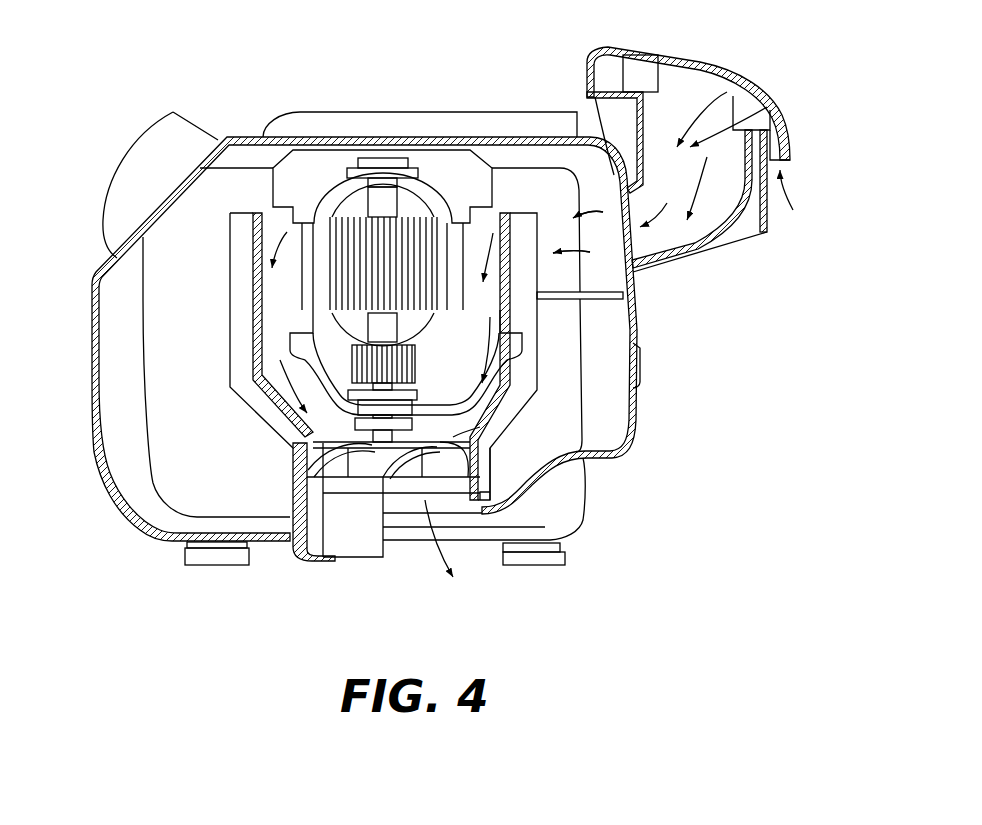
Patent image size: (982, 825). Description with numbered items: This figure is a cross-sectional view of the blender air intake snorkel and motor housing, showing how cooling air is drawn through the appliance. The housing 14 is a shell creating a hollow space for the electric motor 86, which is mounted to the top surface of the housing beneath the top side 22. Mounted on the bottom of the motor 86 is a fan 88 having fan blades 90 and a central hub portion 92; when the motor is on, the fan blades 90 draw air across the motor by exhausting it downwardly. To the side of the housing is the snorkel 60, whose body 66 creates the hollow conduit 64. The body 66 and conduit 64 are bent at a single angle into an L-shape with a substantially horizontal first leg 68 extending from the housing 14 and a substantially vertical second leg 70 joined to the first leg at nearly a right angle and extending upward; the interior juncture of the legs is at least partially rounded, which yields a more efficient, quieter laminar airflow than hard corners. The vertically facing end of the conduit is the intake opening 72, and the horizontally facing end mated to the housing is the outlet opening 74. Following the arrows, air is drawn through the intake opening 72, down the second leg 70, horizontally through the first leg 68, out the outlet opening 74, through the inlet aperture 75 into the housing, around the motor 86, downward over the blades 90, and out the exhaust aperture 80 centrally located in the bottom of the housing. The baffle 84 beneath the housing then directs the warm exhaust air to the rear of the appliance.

The housing 14 is at (92, 378).
The top side 22 is at (232, 136).
The snorkel 60 is at (752, 255).
The conduit 64 is at (767, 102).
The body 66 is at (767, 232).
The first leg 68 is at (747, 248).
The second leg 70 is at (733, 180).
The intake opening 72 is at (670, 88).
The outlet opening 74 is at (640, 240).
The inlet aperture 75 is at (620, 250).
The exhaust aperture 80 is at (413, 550).
The baffle 84 is at (340, 558).
The electric motor 86 is at (430, 258).
The fan 88 is at (323, 556).
The fan blades 90 is at (490, 447).
The central hub portion 92 is at (387, 425).